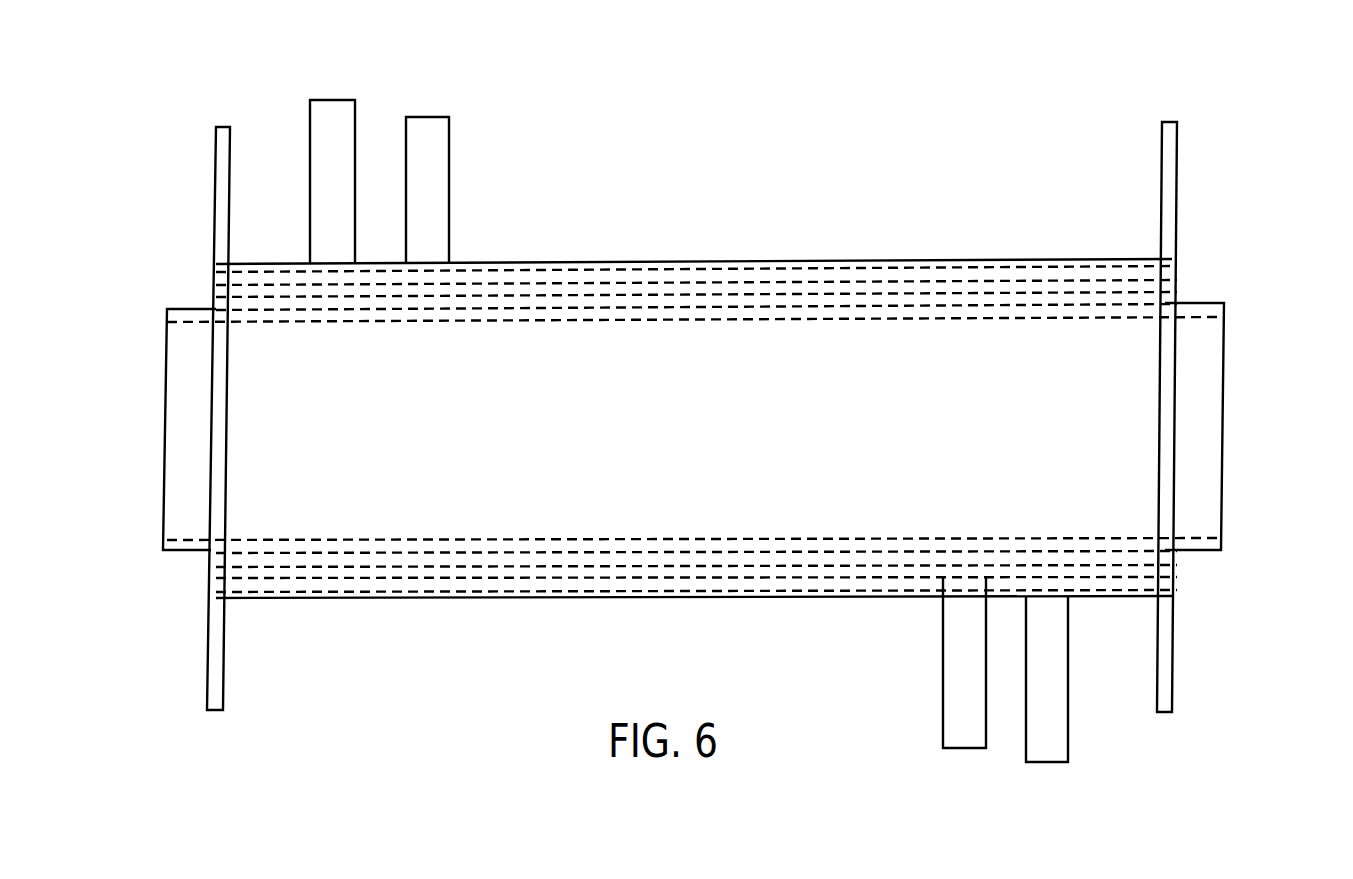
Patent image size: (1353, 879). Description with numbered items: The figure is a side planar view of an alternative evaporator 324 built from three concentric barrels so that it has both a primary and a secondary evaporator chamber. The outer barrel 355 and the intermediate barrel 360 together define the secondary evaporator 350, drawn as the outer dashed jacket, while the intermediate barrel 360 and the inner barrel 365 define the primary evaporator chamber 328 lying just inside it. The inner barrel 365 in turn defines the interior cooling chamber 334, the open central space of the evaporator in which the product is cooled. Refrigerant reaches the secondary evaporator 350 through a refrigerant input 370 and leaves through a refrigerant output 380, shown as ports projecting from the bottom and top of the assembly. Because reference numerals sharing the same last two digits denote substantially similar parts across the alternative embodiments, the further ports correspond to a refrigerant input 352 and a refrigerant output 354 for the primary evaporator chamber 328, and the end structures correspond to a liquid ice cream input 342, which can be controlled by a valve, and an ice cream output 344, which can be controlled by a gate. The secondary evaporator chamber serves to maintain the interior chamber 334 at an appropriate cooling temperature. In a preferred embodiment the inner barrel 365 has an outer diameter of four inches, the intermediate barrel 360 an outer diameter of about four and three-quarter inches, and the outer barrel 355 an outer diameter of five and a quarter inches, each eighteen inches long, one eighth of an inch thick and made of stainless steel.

The evaporator 324 is at (707, 409).
The primary evaporator chamber 328 is at (1163, 297).
The interior cooling chamber 334 is at (155, 429).
The liquid ice cream input 342 is at (163, 428).
The ice cream output 344 is at (1242, 426).
The secondary evaporator 350 is at (778, 272).
The refrigerant input 352 is at (942, 677).
The refrigerant output 354 is at (449, 200).
The outer barrel 355 is at (995, 262).
The intermediate barrel 360 is at (1155, 272).
The inner barrel 365 is at (1225, 308).
The refrigerant input 370 is at (1069, 708).
The refrigerant output 380 is at (355, 120).